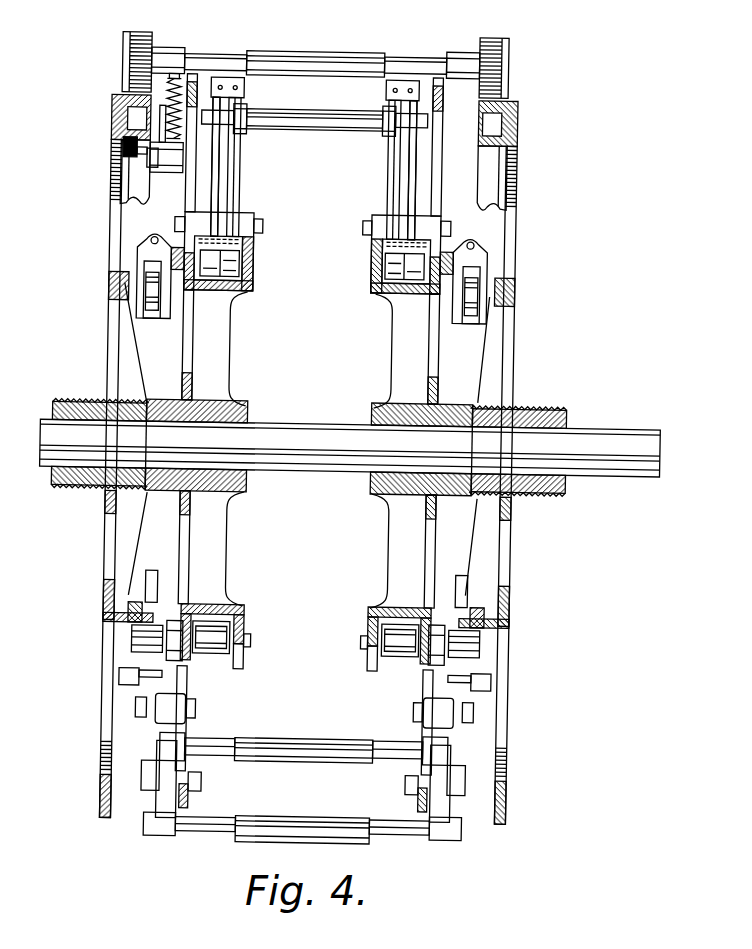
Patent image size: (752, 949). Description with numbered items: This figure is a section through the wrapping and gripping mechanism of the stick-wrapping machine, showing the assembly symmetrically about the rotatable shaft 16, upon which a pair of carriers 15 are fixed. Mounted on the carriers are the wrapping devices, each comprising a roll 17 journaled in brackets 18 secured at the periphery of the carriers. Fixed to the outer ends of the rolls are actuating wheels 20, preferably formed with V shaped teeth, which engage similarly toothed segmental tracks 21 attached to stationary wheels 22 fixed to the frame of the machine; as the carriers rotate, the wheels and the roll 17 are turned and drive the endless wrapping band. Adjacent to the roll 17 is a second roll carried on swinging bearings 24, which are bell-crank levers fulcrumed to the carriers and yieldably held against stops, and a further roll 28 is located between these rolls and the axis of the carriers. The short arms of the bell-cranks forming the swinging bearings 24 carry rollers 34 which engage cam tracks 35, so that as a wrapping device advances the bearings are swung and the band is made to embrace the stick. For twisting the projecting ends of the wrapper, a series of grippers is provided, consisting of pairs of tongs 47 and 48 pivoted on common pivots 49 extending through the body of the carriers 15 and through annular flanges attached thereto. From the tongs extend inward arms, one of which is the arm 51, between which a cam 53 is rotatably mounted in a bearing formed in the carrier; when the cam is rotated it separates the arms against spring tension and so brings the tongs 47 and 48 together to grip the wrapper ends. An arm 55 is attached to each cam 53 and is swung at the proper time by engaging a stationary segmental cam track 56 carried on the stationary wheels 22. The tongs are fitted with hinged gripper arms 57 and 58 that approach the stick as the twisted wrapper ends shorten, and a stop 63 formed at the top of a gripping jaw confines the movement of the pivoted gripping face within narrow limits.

The carriers 15 is at (407, 373).
The rotatable shaft 16 is at (624, 436).
The roll 17 is at (300, 63).
The brackets 18 is at (192, 48).
The actuating wheels 20 is at (126, 60).
The segmental tracks 21 is at (112, 118).
The stationary wheels 22 is at (110, 200).
The swinging bearings 24 is at (140, 152).
The roll 28 is at (318, 128).
The rollers 34 is at (150, 162).
The cam tracks 35 is at (132, 178).
The tongs 47 is at (214, 165).
The tongs 48 is at (233, 190).
The common pivots 49 is at (262, 228).
The arm 51 is at (254, 270).
The cam 53 is at (397, 254).
The arm 55 is at (132, 287).
The segmental cam track 56 is at (110, 604).
The hinged gripper arm 57 is at (216, 140).
The hinged gripper arm 58 is at (246, 112).
The stop 63 is at (232, 78).